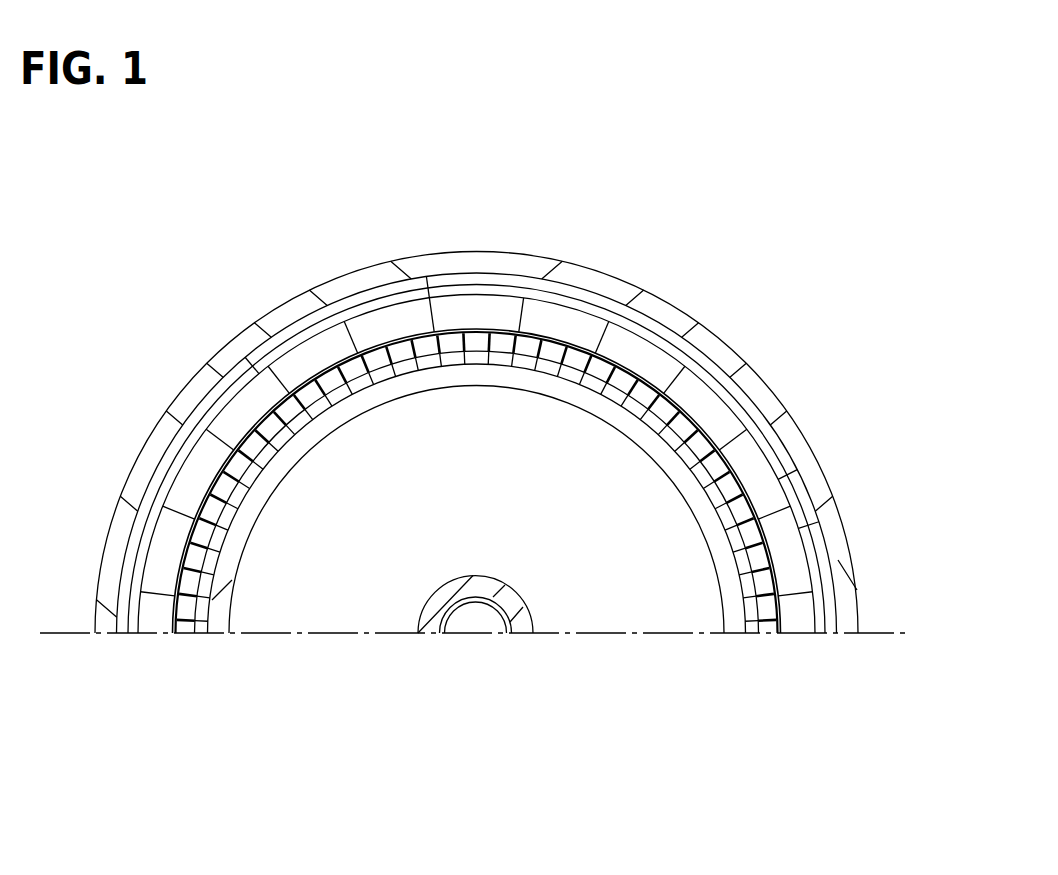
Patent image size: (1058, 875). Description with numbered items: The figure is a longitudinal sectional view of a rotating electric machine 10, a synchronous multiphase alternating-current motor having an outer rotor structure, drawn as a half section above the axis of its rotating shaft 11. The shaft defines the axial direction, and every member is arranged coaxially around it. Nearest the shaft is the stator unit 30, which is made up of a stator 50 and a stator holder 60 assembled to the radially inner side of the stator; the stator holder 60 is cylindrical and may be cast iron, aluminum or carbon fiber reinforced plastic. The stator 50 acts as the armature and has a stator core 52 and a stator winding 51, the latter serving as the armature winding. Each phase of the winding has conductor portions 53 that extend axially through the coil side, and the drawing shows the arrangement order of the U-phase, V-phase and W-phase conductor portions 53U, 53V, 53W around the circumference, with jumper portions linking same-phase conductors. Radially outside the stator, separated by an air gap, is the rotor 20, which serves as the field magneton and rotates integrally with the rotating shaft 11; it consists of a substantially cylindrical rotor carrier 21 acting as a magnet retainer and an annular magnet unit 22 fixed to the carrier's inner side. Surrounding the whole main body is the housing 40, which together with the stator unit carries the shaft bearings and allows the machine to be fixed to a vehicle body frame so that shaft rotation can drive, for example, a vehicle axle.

The rotating electric machine 10 is at (805, 236).
The rotating shaft 11 is at (518, 585).
The rotor 20 is at (515, 447).
The rotor carrier 21 is at (836, 518).
The magnet unit 22 is at (816, 463).
The stator unit 30 is at (297, 371).
The housing 40 is at (771, 385).
The stator 50 is at (470, 538).
The stator winding 51 is at (183, 610).
The stator core 52 is at (204, 612).
The conductor portion 53 is at (477, 492).
The U-phase conductor portion 53U is at (385, 368).
The V-phase conductor portion 53V is at (408, 360).
The W-phase conductor portion 53W is at (432, 357).
The stator holder 60 is at (232, 557).